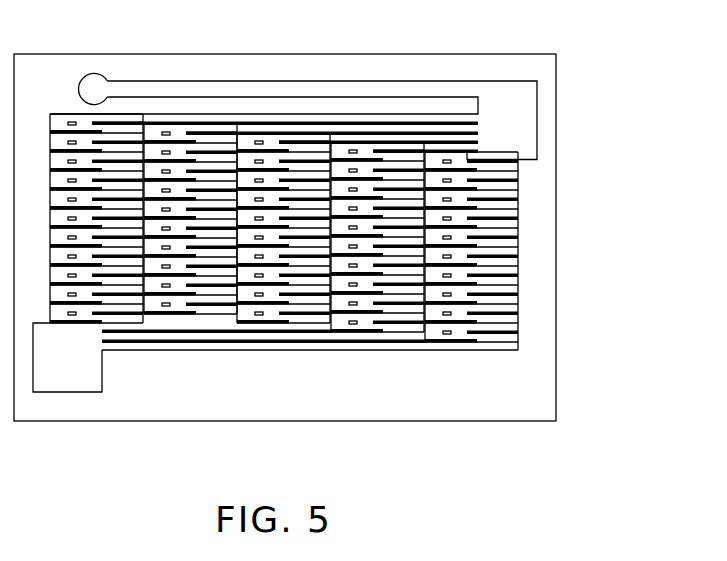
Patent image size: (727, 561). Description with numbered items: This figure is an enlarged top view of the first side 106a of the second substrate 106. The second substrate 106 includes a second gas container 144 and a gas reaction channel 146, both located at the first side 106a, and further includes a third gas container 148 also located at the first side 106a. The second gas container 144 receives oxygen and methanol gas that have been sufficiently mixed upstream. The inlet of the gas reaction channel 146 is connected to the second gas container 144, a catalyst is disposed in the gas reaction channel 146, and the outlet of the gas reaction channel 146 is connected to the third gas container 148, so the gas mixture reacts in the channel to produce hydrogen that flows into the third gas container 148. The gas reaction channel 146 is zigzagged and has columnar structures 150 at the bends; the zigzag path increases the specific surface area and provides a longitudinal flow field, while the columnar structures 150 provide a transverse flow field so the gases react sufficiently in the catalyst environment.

The second substrate 106 is at (560, 326).
The first side 106a is at (517, 378).
The second gas container 144 is at (517, 122).
The gas reaction channel 146 is at (284, 232).
The third gas container 148 is at (101, 372).
The columnar structures 150 is at (456, 269).